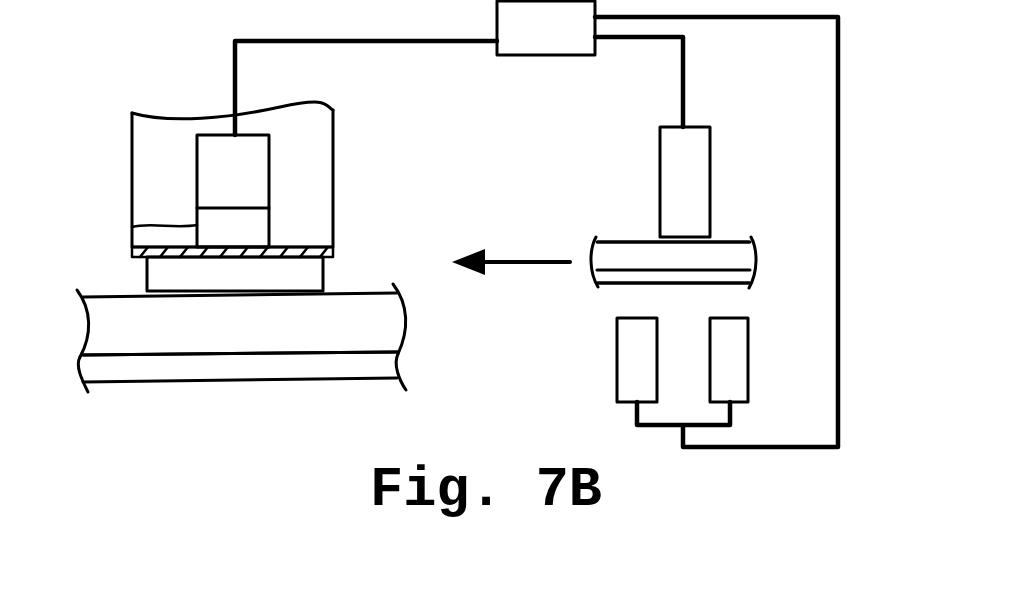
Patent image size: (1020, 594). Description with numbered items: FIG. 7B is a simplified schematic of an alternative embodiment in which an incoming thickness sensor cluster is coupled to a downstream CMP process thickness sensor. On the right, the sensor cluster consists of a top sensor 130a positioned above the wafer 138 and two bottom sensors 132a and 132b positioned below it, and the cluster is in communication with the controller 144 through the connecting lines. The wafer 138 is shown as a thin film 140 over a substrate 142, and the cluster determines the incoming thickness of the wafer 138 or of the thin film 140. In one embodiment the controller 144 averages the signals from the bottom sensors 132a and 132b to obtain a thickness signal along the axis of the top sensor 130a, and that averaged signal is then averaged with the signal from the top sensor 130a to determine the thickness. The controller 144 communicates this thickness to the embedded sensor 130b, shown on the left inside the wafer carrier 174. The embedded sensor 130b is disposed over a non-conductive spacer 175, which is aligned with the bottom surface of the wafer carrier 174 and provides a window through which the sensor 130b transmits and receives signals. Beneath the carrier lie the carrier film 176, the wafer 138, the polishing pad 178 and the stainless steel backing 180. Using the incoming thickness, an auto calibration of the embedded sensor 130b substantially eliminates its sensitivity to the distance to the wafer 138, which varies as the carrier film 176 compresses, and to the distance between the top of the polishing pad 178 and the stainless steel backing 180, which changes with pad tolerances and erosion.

The top sensor 130a is at (660, 161).
The embedded sensor 130b is at (213, 135).
The bottom sensor 132a is at (617, 370).
The bottom sensor 132b is at (749, 365).
The wafer 138 is at (321, 265).
The thin film 140 is at (726, 283).
The substrate 142 is at (733, 241).
The controller 144 is at (541, 56).
The wafer carrier 174 is at (333, 183).
The spacer 175 is at (134, 227).
The carrier film 176 is at (335, 250).
The polishing pad 178 is at (396, 318).
The stainless steel backing 180 is at (396, 361).